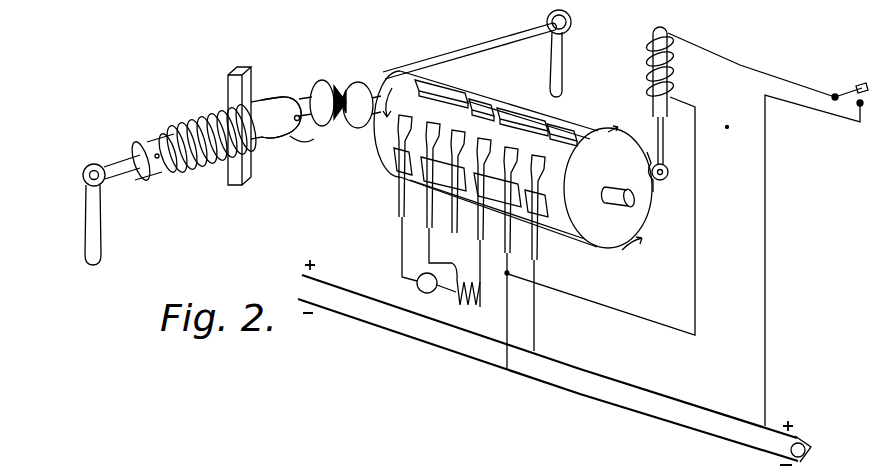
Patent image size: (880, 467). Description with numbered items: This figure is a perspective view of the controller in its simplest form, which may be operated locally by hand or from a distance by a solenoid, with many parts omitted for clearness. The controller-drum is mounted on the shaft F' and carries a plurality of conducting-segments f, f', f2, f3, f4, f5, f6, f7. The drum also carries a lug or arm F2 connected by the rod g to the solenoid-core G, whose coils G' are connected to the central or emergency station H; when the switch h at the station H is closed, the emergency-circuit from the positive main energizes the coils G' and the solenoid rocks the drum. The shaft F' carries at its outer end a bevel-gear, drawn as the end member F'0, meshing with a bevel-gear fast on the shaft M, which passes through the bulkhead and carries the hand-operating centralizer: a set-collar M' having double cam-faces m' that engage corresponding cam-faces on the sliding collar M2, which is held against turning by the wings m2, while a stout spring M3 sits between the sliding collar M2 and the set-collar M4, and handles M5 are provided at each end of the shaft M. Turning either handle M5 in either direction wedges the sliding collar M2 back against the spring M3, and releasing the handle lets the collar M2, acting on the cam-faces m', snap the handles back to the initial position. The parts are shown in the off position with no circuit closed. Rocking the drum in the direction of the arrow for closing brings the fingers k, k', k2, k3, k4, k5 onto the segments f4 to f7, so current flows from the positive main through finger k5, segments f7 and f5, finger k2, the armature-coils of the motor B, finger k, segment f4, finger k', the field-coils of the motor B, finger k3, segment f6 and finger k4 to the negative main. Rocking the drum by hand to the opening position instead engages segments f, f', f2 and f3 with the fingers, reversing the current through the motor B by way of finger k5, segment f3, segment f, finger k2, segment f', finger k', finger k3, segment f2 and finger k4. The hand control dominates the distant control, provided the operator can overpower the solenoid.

The shaft M is at (469, 44).
The set-collar M' is at (322, 122).
The sliding collar M2 is at (263, 140).
The spring M3 is at (197, 117).
The set-collar M4 is at (158, 174).
The handle M5 is at (115, 210).
The cam-faces m' is at (282, 102).
The wings m2 is at (233, 82).
The shaft F' is at (513, 177).
The drum end / axle F'' is at (488, 181).
The lug or arm F2 is at (657, 198).
The drum end disc F'0 is at (362, 103).
The conducting-segment f is at (385, 178).
The conducting-segment f' is at (408, 196).
The conducting-segment f2 is at (495, 190).
The conducting-segment f3 is at (537, 217).
The conducting-segment f4 is at (437, 98).
The conducting-segment f5 is at (485, 105).
The conducting-segment f6 is at (530, 125).
The conducting-segment f7 is at (572, 134).
The contact-finger k is at (411, 192).
The contact-finger k' is at (441, 197).
The contact-finger k2 is at (467, 135).
The contact-finger k3 is at (489, 146).
The contact-finger k4 is at (521, 152).
The contact-finger k5 is at (544, 163).
The solenoid-core G is at (682, 70).
The solenoid-coils G' is at (680, 66).
The rod g is at (663, 148).
The switch h is at (850, 80).
The emergency-station H is at (814, 260).
The motor B is at (448, 297).